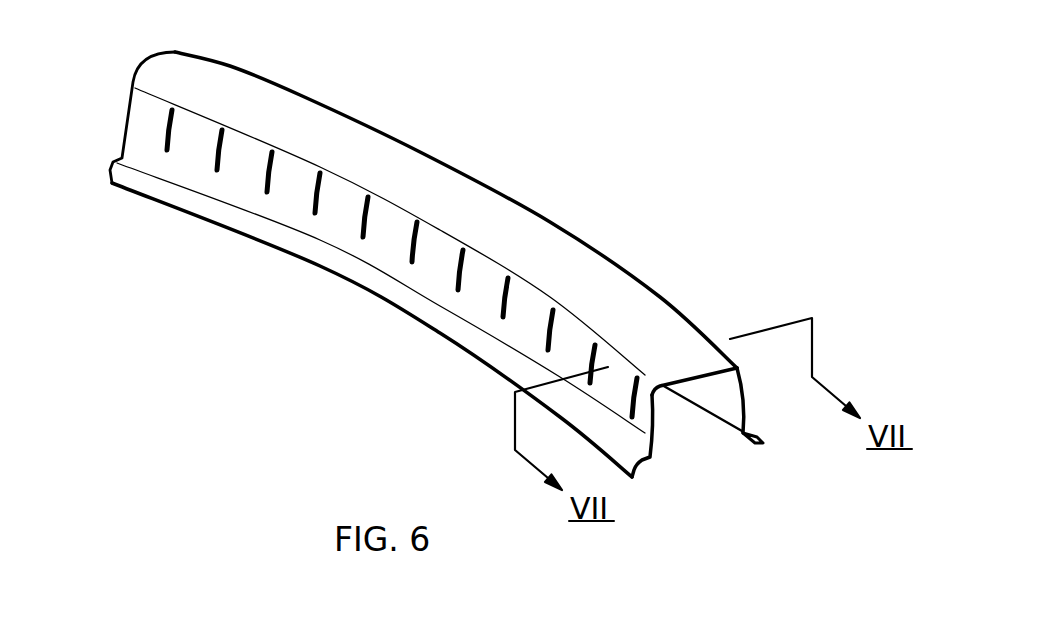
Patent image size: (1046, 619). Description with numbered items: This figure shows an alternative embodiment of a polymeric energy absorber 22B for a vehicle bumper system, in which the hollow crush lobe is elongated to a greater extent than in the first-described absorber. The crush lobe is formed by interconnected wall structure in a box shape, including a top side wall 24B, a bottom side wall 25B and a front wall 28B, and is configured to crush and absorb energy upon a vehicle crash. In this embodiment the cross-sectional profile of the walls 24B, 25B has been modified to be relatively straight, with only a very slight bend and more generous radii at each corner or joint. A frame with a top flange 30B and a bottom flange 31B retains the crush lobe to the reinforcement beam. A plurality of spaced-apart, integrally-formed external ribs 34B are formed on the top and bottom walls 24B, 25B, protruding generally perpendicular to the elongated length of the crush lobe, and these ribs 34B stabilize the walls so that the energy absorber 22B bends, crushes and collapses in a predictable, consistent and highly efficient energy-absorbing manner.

The energy absorber 22B is at (438, 102).
The top side wall 24B is at (748, 402).
The bottom side wall 25B is at (645, 433).
The front wall 28B is at (622, 297).
The top flange 30B is at (767, 443).
The bottom flange 31B is at (337, 265).
The external ribs 34B is at (267, 153).